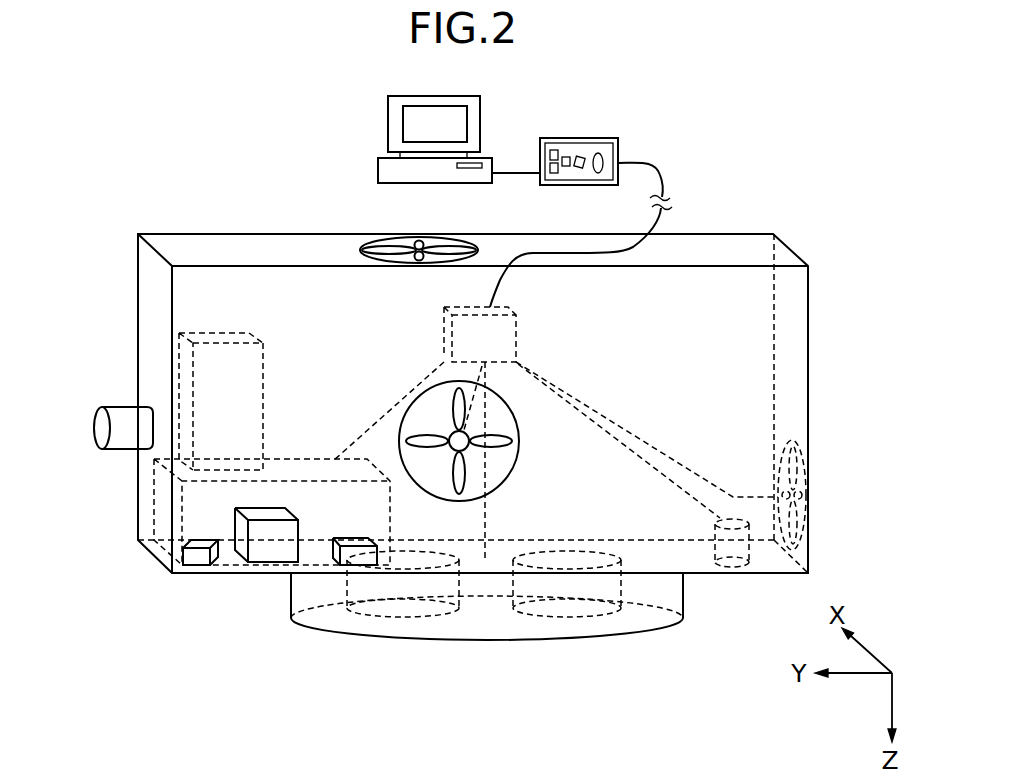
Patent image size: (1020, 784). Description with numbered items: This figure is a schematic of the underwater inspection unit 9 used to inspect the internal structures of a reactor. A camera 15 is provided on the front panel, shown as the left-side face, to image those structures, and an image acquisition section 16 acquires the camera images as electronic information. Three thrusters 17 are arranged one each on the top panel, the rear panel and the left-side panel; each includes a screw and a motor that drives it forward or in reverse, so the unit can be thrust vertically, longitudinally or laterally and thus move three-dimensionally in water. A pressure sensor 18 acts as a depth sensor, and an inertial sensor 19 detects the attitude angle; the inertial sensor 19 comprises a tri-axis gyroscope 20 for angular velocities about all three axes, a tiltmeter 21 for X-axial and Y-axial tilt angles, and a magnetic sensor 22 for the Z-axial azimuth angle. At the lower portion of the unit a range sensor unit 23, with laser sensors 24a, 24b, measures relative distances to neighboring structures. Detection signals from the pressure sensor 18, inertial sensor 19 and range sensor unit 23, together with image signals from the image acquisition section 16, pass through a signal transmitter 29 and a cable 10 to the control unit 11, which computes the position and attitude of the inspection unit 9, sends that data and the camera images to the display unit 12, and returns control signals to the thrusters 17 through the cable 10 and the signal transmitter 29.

The underwater inspection unit 9 is at (818, 246).
The cable 10 is at (672, 166).
The control unit 11 is at (577, 138).
The display unit 12 is at (378, 172).
The camera 15 is at (94, 428).
The image acquisition section 16 is at (226, 330).
The thruster 17 is at (372, 240).
The pressure sensor 18 is at (735, 568).
The inertial sensor 19 is at (160, 508).
The tri-axis gyroscope 20 is at (266, 564).
The tiltmeter 21 is at (352, 542).
The magnetic sensor 22 is at (206, 568).
The range sensor unit 23 is at (640, 636).
The laser sensor 24a is at (408, 622).
The laser sensor 24b is at (570, 622).
The signal transmitter 29 is at (516, 333).